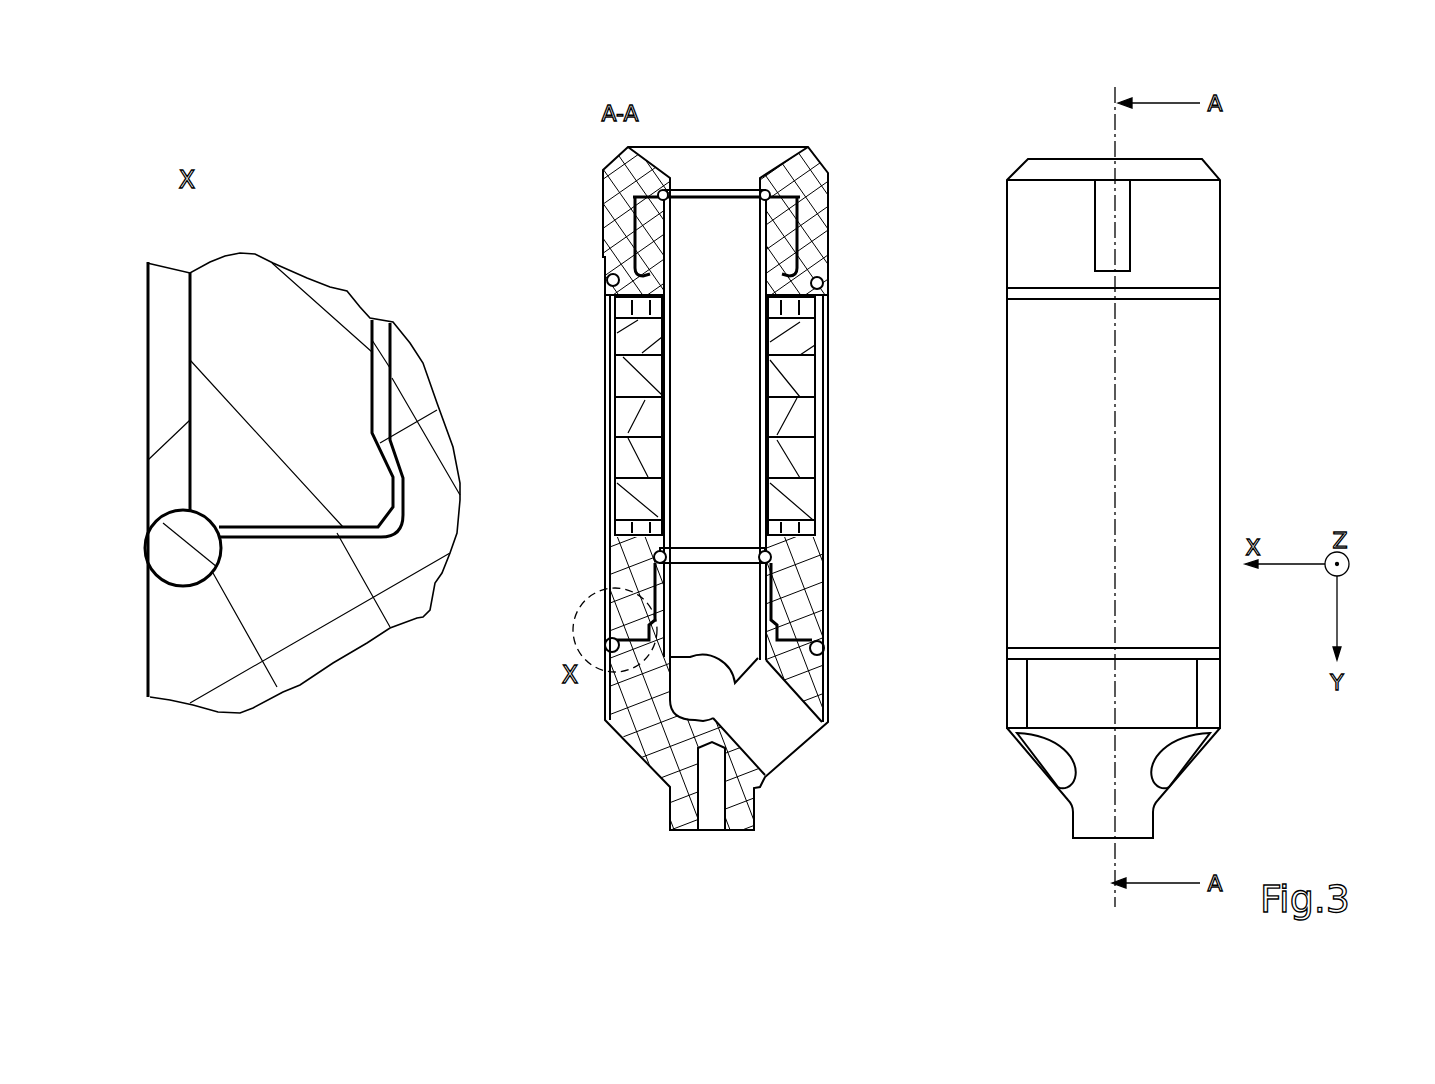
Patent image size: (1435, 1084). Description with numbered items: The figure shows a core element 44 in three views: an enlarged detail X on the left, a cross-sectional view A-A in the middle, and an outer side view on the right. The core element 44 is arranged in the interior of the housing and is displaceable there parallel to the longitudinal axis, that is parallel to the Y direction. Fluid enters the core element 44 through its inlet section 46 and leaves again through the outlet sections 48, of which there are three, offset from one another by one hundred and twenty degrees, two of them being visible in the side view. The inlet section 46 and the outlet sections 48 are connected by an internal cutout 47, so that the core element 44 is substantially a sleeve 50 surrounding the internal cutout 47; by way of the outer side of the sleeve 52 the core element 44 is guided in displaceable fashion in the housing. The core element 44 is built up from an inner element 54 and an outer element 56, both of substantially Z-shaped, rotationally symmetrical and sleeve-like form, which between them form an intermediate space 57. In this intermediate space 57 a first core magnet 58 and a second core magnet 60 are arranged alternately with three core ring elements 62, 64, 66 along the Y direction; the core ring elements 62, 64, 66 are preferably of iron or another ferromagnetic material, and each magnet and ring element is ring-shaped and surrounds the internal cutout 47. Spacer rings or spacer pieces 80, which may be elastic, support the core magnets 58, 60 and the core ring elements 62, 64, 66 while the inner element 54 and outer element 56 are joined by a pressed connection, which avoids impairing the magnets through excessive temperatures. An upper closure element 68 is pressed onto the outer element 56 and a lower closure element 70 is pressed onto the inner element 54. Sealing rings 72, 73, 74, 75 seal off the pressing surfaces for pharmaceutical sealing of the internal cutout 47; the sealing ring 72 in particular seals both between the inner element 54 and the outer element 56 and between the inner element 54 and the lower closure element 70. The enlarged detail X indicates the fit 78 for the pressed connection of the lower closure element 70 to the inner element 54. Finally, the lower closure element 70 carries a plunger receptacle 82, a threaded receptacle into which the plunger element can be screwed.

The core element 44 is at (1270, 190).
The inlet section 46 is at (733, 175).
The internal cutout 47 is at (714, 228).
The outlet section 48 is at (765, 739).
The sleeve 50 is at (1195, 372).
The outer side of the sleeve 52 is at (1160, 500).
The inner element 54 is at (245, 283).
The outer element 56 is at (172, 372).
The intermediate space 57 is at (622, 307).
The first core magnet 58 is at (803, 463).
The second core magnet 60 is at (803, 380).
The core ring element 62 is at (805, 507).
The core ring element 64 is at (803, 418).
The core ring element 66 is at (803, 335).
The upper closure element 68 is at (808, 172).
The lower closure element 70 is at (190, 668).
The sealing ring 72 is at (140, 566).
The sealing ring 73 is at (780, 555).
The sealing ring 74 is at (823, 282).
The sealing ring 75 is at (770, 190).
The fit 78 is at (386, 300).
The spacer ring 80 is at (642, 528).
The plunger receptacle 82 is at (710, 812).